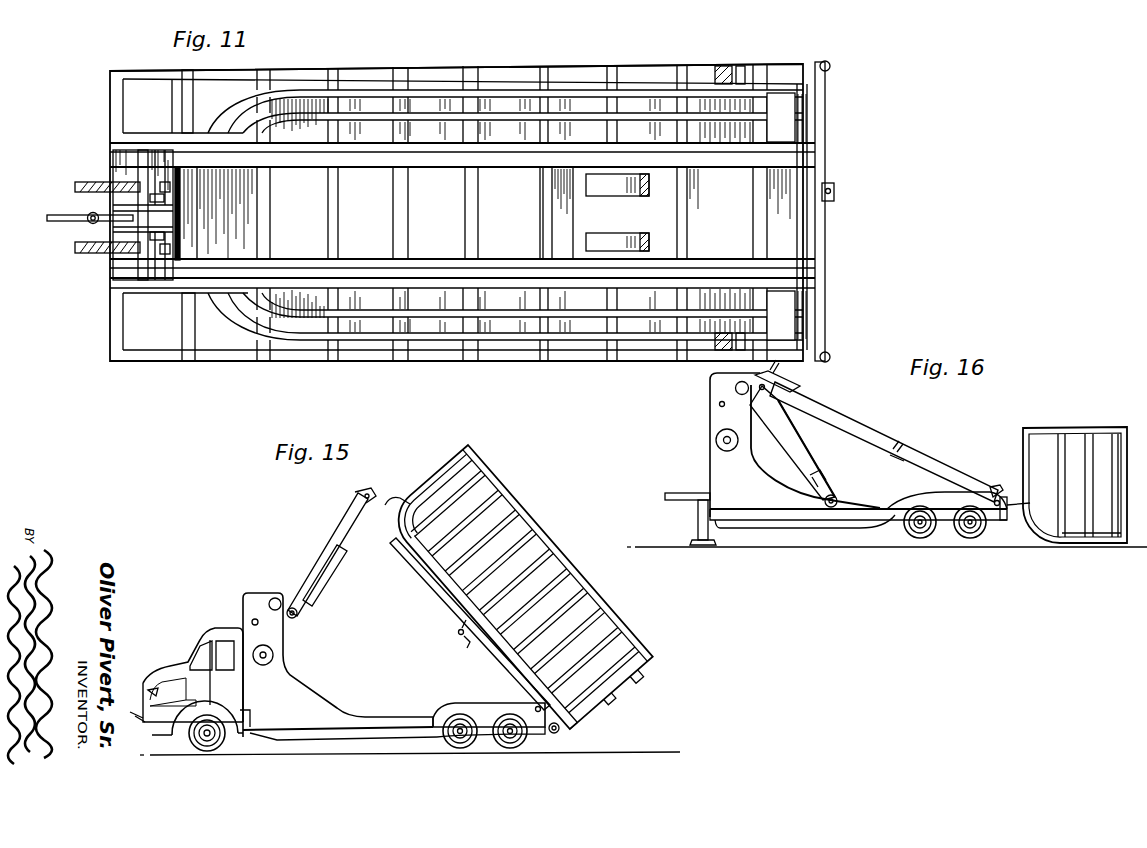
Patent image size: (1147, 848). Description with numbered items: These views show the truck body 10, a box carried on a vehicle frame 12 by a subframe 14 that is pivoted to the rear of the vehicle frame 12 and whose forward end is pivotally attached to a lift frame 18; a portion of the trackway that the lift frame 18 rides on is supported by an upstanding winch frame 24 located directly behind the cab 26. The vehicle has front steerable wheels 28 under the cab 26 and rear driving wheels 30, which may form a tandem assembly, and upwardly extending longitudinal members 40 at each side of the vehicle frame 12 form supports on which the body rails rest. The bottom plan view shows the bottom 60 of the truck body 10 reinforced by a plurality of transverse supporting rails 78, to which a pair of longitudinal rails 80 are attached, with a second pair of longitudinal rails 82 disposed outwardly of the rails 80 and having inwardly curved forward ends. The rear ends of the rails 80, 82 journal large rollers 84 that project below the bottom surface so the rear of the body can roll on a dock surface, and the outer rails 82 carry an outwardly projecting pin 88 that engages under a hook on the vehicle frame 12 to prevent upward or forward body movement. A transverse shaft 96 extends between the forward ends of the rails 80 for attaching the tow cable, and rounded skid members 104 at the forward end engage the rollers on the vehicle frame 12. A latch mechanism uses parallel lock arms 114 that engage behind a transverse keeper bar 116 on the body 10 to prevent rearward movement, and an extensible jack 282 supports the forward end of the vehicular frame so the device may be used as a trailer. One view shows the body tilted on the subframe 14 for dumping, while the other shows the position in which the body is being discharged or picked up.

In FIG. 15, the truck body 10 is at (538, 511).
In FIG. 16, the truck body 10 is at (1040, 425).
In FIG. 15, the vehicle frame 12 is at (422, 710).
In FIG. 16, the vehicle frame 12 is at (868, 497).
In FIG. 15, the subframe 14 is at (422, 583).
In FIG. 16, the subframe 14 is at (852, 420).
In FIG. 15, the lift frame 18 is at (318, 557).
In FIG. 16, the lift frame 18 is at (800, 460).
In FIG. 15, the winch frame 24 is at (253, 591).
In FIG. 16, the winch frame 24 is at (712, 407).
In FIG. 15, the cab 26 is at (201, 634).
In FIG. 15, the front steerable wheels 28 is at (217, 741).
In FIG. 15, the rear driving wheels 30 is at (522, 740).
In FIG. 16, the rear driving wheels 30 is at (975, 537).
In FIG. 15, the longitudinally disposed members 40 is at (486, 714).
In FIG. 16, the longitudinally disposed members 40 is at (945, 498).
In FIG. 11, the bottom 60 is at (472, 211).
In FIG. 11, the transverse supporting rails 78 is at (333, 80).
In FIG. 11, the longitudinal rails 80 is at (503, 157).
In FIG. 11, the longitudinal rails 82 is at (573, 106).
In FIG. 11, the large rollers 84 is at (796, 115).
In FIG. 11, the pin 88 is at (731, 73).
In FIG. 11, the transverse shaft 96 is at (143, 260).
In FIG. 11, the skid members 104 is at (74, 247).
In FIG. 11, the lock arms 114 is at (647, 240).
In FIG. 11, the keeper bar 116 is at (585, 231).
In FIG. 16, the extensible jack 282 is at (721, 546).